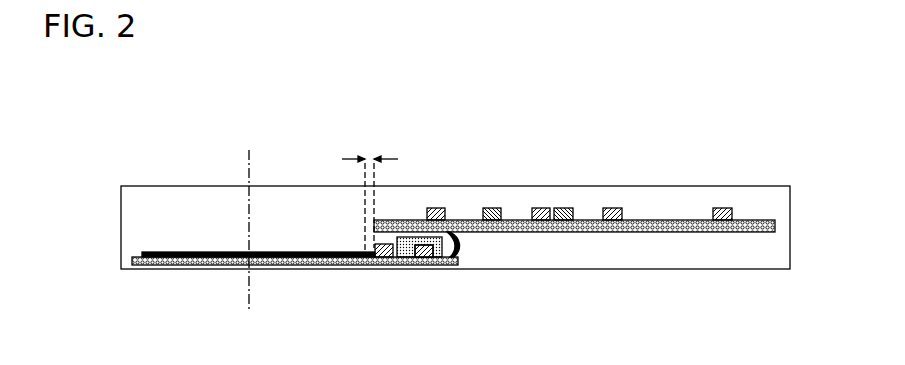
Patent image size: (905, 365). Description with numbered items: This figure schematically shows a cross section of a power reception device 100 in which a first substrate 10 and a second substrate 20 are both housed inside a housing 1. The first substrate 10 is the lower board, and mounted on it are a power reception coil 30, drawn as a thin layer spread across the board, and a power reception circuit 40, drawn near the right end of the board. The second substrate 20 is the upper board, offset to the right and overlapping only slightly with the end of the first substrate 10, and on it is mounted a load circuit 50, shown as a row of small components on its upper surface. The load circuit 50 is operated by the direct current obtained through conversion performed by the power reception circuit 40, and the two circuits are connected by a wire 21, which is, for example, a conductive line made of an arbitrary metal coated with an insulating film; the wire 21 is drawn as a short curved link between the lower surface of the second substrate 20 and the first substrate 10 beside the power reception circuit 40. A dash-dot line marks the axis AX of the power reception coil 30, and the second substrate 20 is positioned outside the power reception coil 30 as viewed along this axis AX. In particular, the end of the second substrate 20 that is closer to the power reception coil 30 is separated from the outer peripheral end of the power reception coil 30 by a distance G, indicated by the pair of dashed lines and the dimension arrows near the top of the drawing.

The power reception device 100 is at (622, 136).
The housing 1 is at (650, 186).
The first substrate 10 is at (131, 261).
The second substrate 20 is at (758, 220).
The wire 21 is at (461, 248).
The power reception coil 30 is at (167, 252).
The power reception circuit 40 is at (383, 257).
The load circuit 50 is at (436, 208).
The axis AX is at (248, 217).
The distance G is at (369, 195).